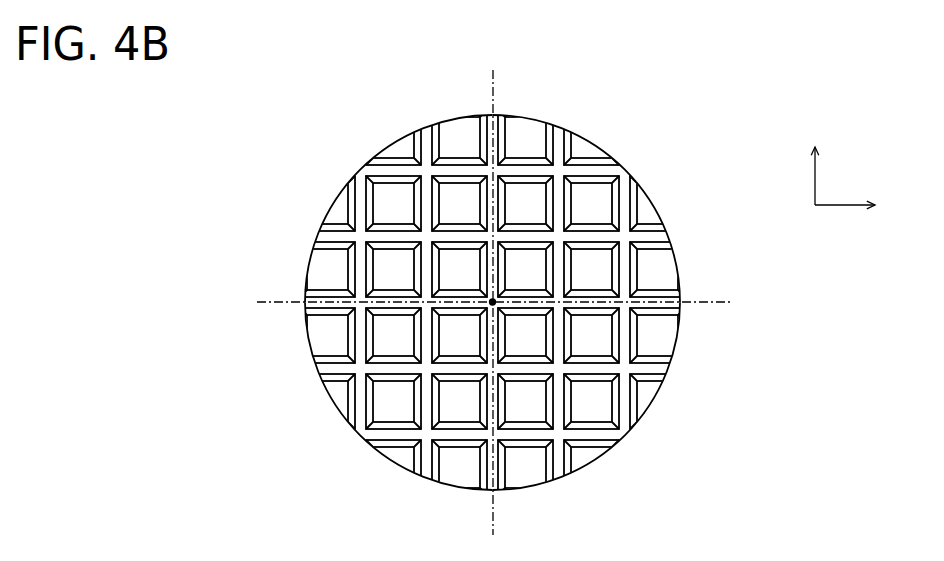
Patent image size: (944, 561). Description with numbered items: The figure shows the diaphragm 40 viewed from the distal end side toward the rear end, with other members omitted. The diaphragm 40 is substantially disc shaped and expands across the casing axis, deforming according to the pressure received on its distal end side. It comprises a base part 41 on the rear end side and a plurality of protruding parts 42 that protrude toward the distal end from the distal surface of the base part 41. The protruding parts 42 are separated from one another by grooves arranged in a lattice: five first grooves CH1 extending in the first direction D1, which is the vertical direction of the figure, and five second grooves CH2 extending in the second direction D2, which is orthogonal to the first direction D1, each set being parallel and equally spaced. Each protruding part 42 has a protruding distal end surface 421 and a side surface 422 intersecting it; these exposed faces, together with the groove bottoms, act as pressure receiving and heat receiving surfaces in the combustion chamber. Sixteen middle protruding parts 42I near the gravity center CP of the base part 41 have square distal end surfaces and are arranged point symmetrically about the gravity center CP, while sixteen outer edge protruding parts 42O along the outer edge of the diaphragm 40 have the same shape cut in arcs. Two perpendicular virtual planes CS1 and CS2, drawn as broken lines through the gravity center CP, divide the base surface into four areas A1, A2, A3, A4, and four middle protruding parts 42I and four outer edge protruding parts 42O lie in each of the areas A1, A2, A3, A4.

The diaphragm 40 is at (738, 135).
The base part 41 is at (407, 433).
The protruding parts 42 is at (392, 345).
The protruding distal end surface 421 is at (323, 332).
The side surface 422 is at (317, 367).
The middle protruding parts 42I is at (453, 407).
The outer edge protruding parts 42O is at (585, 457).
The first grooves CH1 is at (423, 128).
The second grooves CH2 is at (587, 168).
The virtual plane CS1 is at (712, 300).
The virtual plane CS2 is at (488, 95).
The gravity center CP is at (490, 300).
The area A1 is at (330, 207).
The area A2 is at (666, 210).
The area A3 is at (330, 393).
The area A4 is at (666, 390).
The first direction D1 is at (817, 164).
The second direction D2 is at (862, 205).